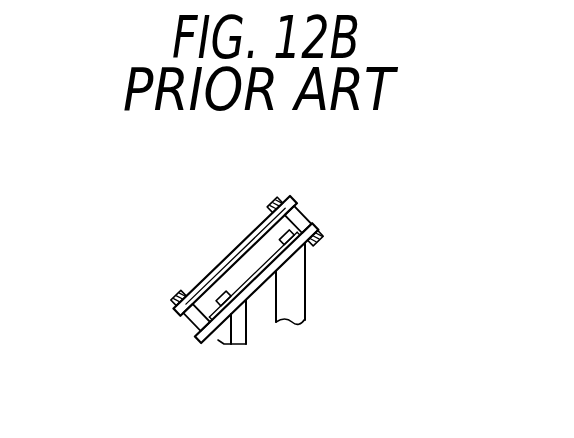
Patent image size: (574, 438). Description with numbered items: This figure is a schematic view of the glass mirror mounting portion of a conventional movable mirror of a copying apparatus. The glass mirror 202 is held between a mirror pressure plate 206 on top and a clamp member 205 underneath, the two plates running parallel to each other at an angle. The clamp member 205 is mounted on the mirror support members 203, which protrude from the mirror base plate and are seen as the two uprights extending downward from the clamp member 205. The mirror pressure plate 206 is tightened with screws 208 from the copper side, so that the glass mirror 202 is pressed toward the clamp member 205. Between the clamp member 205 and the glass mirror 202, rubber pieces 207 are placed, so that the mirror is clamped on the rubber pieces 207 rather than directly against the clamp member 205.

The glass mirror 202 is at (242, 267).
The mirror support members 203 is at (306, 305).
The clamp member 205 is at (326, 233).
The mirror pressure plate 206 is at (293, 195).
The rubber piece 207 is at (297, 230).
The screw 208 is at (171, 304).